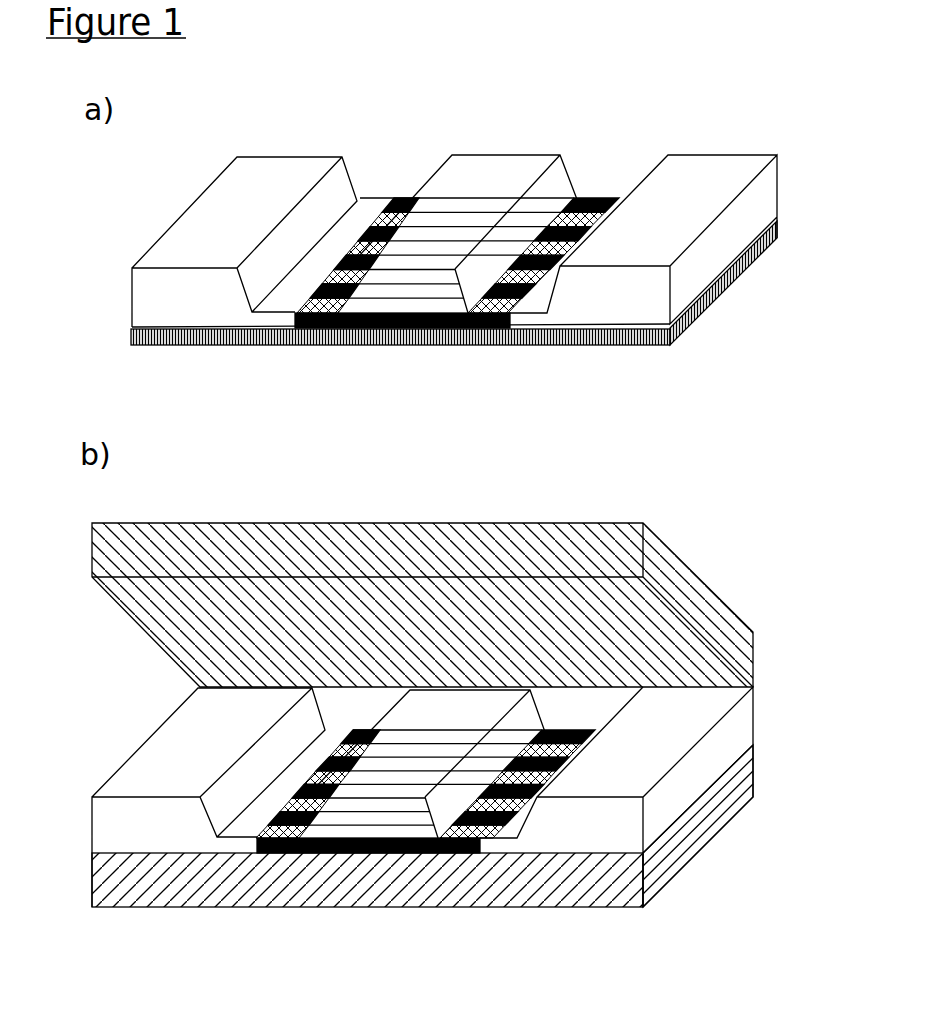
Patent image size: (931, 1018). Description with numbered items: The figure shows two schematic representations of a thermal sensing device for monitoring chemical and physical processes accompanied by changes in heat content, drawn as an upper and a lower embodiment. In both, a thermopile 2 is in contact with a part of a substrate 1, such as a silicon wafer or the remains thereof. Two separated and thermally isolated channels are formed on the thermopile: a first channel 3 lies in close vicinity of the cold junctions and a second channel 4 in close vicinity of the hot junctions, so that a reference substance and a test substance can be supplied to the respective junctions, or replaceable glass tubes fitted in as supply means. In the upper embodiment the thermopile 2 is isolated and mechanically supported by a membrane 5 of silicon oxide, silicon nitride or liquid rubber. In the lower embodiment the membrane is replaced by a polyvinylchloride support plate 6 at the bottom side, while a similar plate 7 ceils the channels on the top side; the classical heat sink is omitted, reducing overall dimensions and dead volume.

The substrate 1 is at (195, 227).
The thermopile 2 is at (295, 321).
The first channel 3 is at (347, 233).
The second channel 4 is at (578, 202).
The membrane 5 is at (573, 340).
The support plate 6 is at (528, 905).
The plate 7 is at (203, 537).